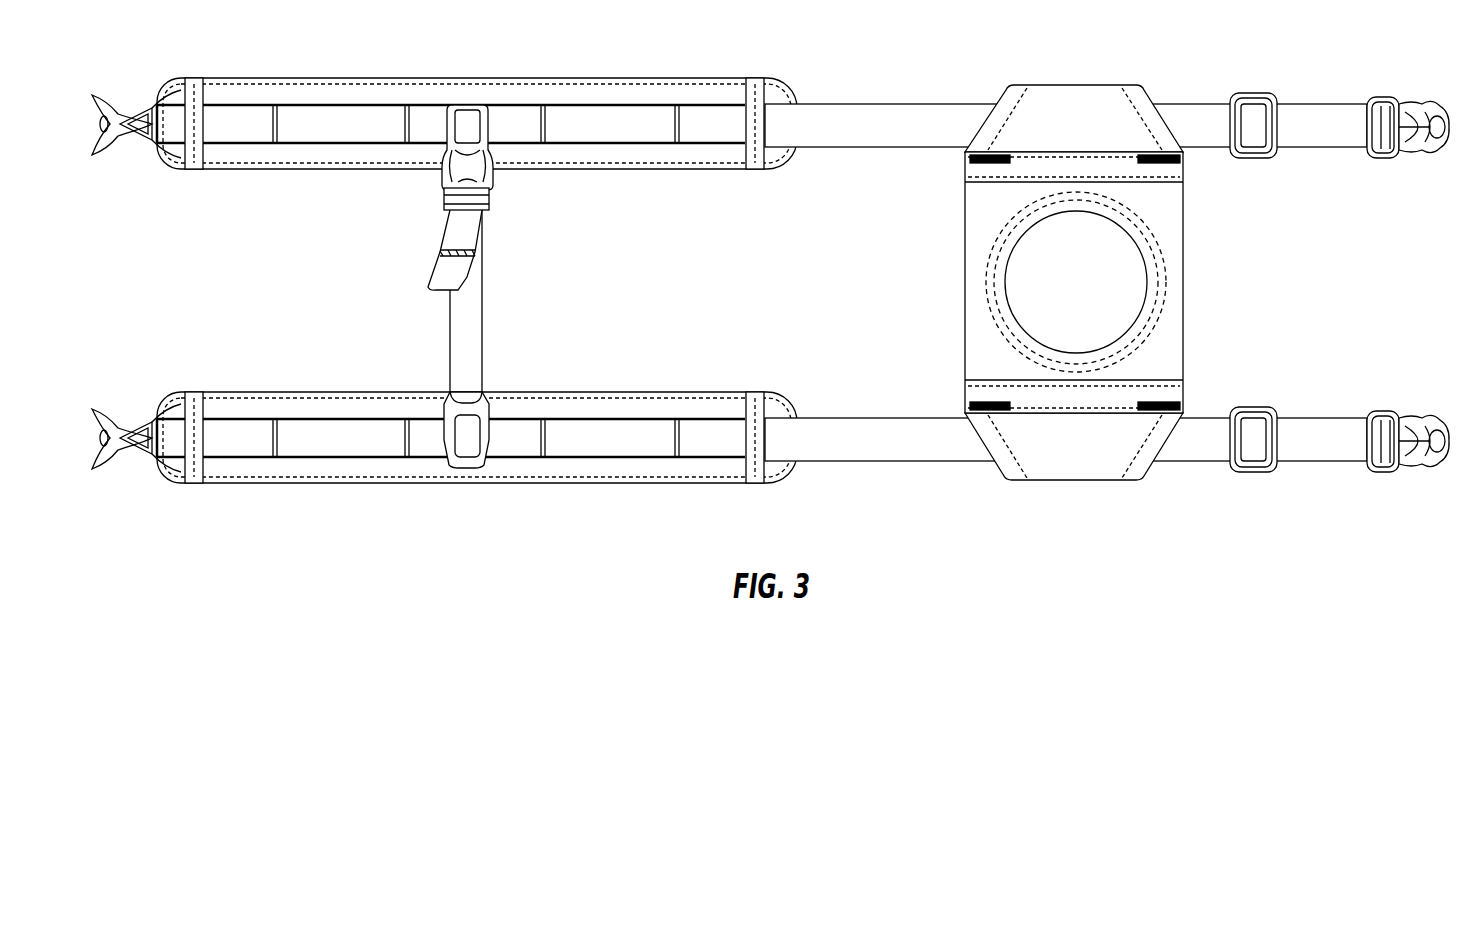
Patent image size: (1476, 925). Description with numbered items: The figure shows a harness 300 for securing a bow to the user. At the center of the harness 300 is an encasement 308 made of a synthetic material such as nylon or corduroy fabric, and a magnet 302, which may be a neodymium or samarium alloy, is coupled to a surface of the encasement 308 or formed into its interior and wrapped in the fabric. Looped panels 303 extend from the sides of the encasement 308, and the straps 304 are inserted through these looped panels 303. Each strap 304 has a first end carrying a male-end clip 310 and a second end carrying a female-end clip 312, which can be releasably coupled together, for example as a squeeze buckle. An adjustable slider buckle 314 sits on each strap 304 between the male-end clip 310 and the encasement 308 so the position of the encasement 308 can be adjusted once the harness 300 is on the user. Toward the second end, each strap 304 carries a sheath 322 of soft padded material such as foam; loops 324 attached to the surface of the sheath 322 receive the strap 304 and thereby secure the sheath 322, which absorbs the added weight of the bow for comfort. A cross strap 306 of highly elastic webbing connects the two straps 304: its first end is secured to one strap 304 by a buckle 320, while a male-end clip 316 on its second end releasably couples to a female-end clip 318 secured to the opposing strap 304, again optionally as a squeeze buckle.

The harness 300 is at (188, 248).
The magnet 302 is at (1096, 293).
The looped panels 303 is at (1096, 132).
The straps 304 is at (870, 120).
The cross strap 306 is at (470, 317).
The encasement 308 is at (1122, 282).
The male-end clip 310 is at (1413, 101).
The female-end clip 312 is at (123, 105).
The adjustable slider buckle 314 is at (1259, 95).
The male-end clip 316 is at (489, 196).
The female-end clip 318 is at (446, 143).
The buckle 320 is at (483, 415).
The sheath 322 is at (638, 152).
The loops 324 is at (197, 97).